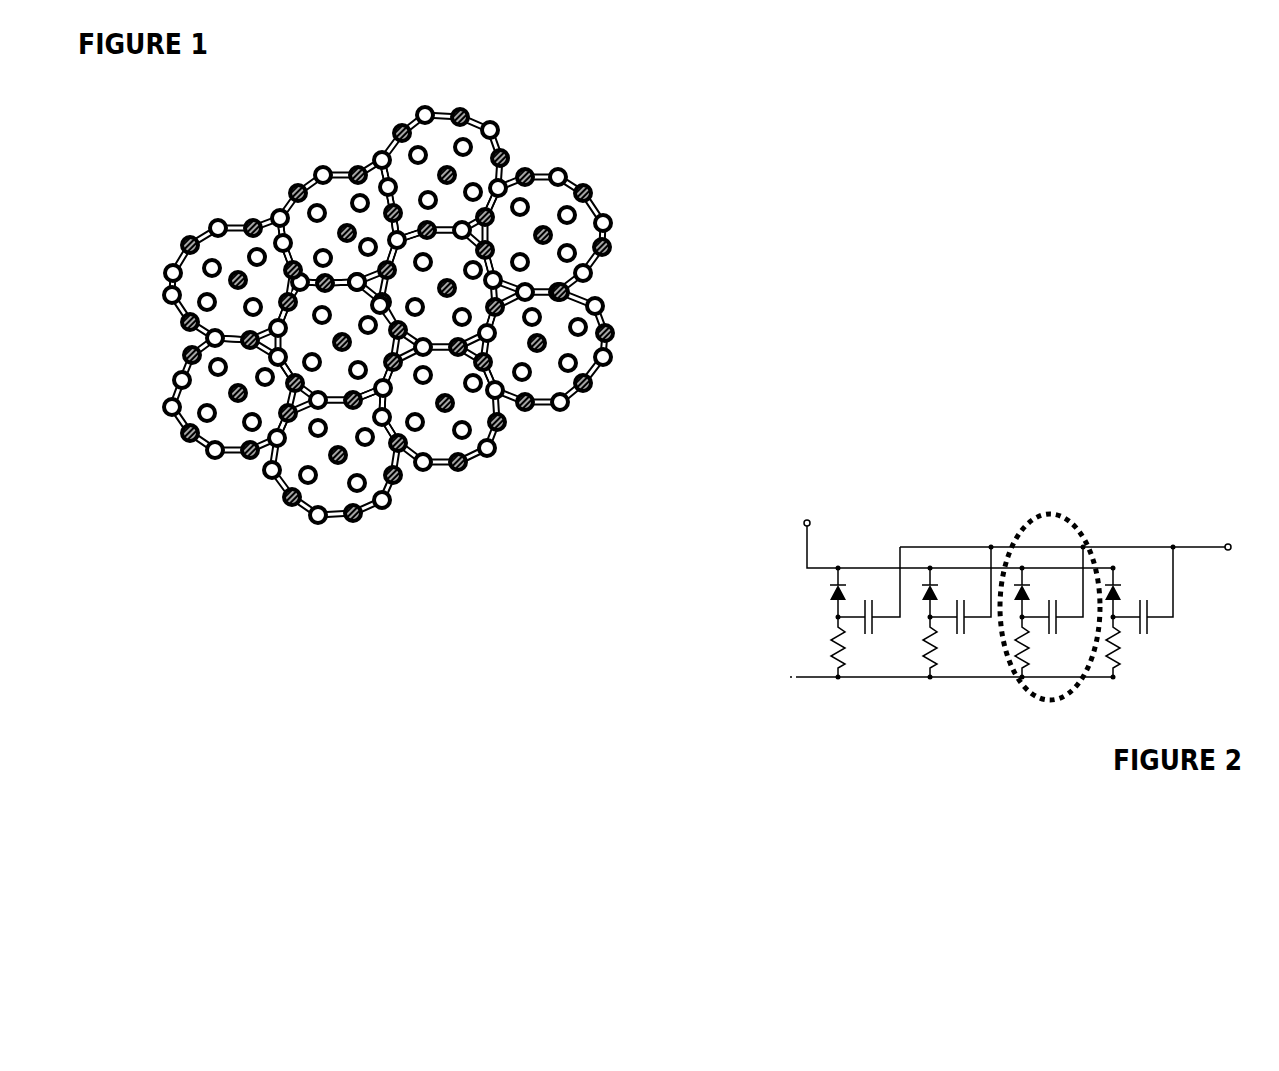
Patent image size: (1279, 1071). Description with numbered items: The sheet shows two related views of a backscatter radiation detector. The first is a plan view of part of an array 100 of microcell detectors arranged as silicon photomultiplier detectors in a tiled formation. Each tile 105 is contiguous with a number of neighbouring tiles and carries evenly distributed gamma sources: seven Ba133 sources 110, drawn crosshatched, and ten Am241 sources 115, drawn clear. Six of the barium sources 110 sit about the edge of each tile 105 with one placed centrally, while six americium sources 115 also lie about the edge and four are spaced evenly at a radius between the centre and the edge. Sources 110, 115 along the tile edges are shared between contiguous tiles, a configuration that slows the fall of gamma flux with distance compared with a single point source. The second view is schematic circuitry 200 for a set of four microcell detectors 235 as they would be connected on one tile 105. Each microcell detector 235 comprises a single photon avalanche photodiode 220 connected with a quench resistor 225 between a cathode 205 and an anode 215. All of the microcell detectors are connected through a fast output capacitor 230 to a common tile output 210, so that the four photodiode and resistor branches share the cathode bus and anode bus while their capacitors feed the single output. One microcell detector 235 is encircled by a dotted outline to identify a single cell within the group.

In FIG. 1, the array 100 is at (453, 531).
In FIG. 1, the tile 105 is at (320, 230).
In FIG. 1, the Ba133 source 110 is at (567, 172).
In FIG. 1, the Am241 source 115 is at (603, 303).
In FIG. 2, the equivalent circuit 200 is at (1028, 340).
In FIG. 2, the cathode 205 is at (808, 517).
In FIG. 2, the tile output 210 is at (1226, 541).
In FIG. 2, the anode 215 is at (787, 678).
In FIG. 2, the single photon avalanche photodiode 220 is at (832, 595).
In FIG. 2, the quench resistor 225 is at (843, 648).
In FIG. 2, the fast output capacitor 230 is at (867, 628).
In FIG. 2, the microcell detector 235 is at (1067, 513).